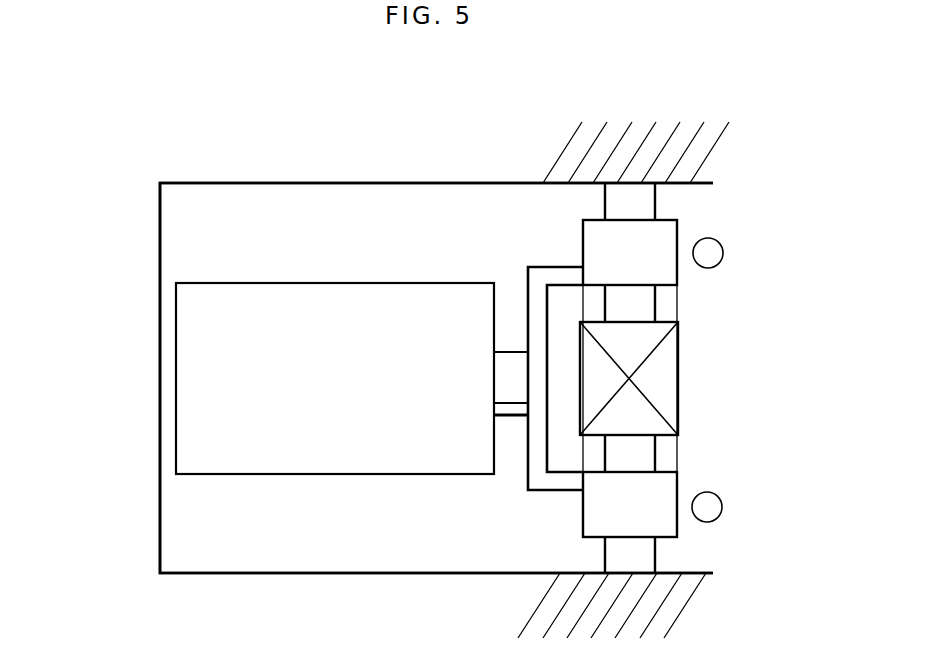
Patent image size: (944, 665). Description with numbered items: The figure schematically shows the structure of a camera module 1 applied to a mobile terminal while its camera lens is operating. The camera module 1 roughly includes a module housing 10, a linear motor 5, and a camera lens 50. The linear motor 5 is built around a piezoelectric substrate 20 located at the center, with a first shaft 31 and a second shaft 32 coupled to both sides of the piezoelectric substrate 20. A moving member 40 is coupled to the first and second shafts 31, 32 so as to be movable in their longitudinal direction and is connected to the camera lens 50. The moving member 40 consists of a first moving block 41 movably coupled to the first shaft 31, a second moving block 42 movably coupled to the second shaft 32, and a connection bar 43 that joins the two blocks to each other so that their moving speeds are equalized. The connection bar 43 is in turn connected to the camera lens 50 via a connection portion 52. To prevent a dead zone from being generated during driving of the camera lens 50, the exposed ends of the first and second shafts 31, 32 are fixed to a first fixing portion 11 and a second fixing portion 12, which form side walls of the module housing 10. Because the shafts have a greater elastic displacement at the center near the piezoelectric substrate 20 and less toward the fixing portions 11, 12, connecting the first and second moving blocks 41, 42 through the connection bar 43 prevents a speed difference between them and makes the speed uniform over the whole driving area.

The camera module 1 is at (126, 139).
The linear motor 5 is at (512, 275).
The module housing 10 is at (316, 183).
The first fixing portion 11 is at (736, 141).
The second fixing portion 12 is at (711, 602).
The piezoelectric substrate 20 is at (600, 405).
The first shaft 31 is at (645, 207).
The second shaft 32 is at (645, 555).
The moving member 40 is at (783, 283).
The first moving block 41 is at (670, 277).
The second moving block 42 is at (670, 475).
The connection bar 43 is at (542, 338).
The camera lens 50 is at (197, 363).
The connection portion 52 is at (510, 382).